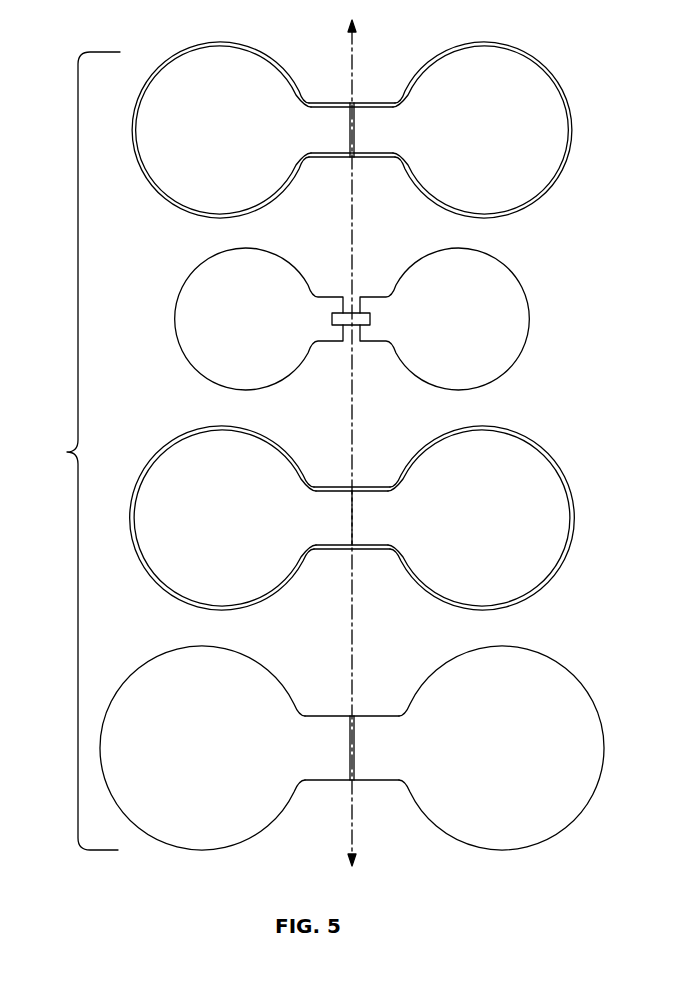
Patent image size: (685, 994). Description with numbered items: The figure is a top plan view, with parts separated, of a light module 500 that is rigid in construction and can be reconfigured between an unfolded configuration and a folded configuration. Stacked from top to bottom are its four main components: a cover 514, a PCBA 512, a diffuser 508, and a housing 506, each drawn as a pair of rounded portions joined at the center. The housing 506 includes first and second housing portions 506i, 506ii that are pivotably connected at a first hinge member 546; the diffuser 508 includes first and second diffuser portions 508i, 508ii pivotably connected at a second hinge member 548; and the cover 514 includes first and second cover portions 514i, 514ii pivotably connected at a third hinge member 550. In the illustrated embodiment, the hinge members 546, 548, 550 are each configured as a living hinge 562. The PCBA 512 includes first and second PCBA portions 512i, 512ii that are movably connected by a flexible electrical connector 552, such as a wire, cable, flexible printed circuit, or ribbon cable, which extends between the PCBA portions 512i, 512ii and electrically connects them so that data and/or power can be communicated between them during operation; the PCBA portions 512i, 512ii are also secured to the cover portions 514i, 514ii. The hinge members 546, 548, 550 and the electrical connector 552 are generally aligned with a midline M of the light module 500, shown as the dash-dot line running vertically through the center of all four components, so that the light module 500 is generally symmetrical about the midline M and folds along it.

The light module 500 is at (73, 451).
The housing 506 is at (383, 757).
The first housing portion 506i is at (187, 860).
The second housing portion 506ii is at (527, 858).
The diffuser 508 is at (386, 524).
The first diffuser portion 508i is at (208, 614).
The second diffuser portion 508ii is at (497, 615).
The PCBA 512 is at (374, 311).
The first PCBA portion 512i is at (208, 387).
The second PCBA portion 512ii is at (497, 385).
The cover 514 is at (368, 130).
The first cover portion 514i is at (194, 220).
The second cover portion 514ii is at (527, 213).
The first hinge member 546 is at (362, 748).
The second hinge member 548 is at (359, 510).
The third hinge member 550 is at (368, 122).
The electrical connector 552 is at (365, 306).
The living hinge 562 is at (350, 128).
The midline M is at (345, 46).